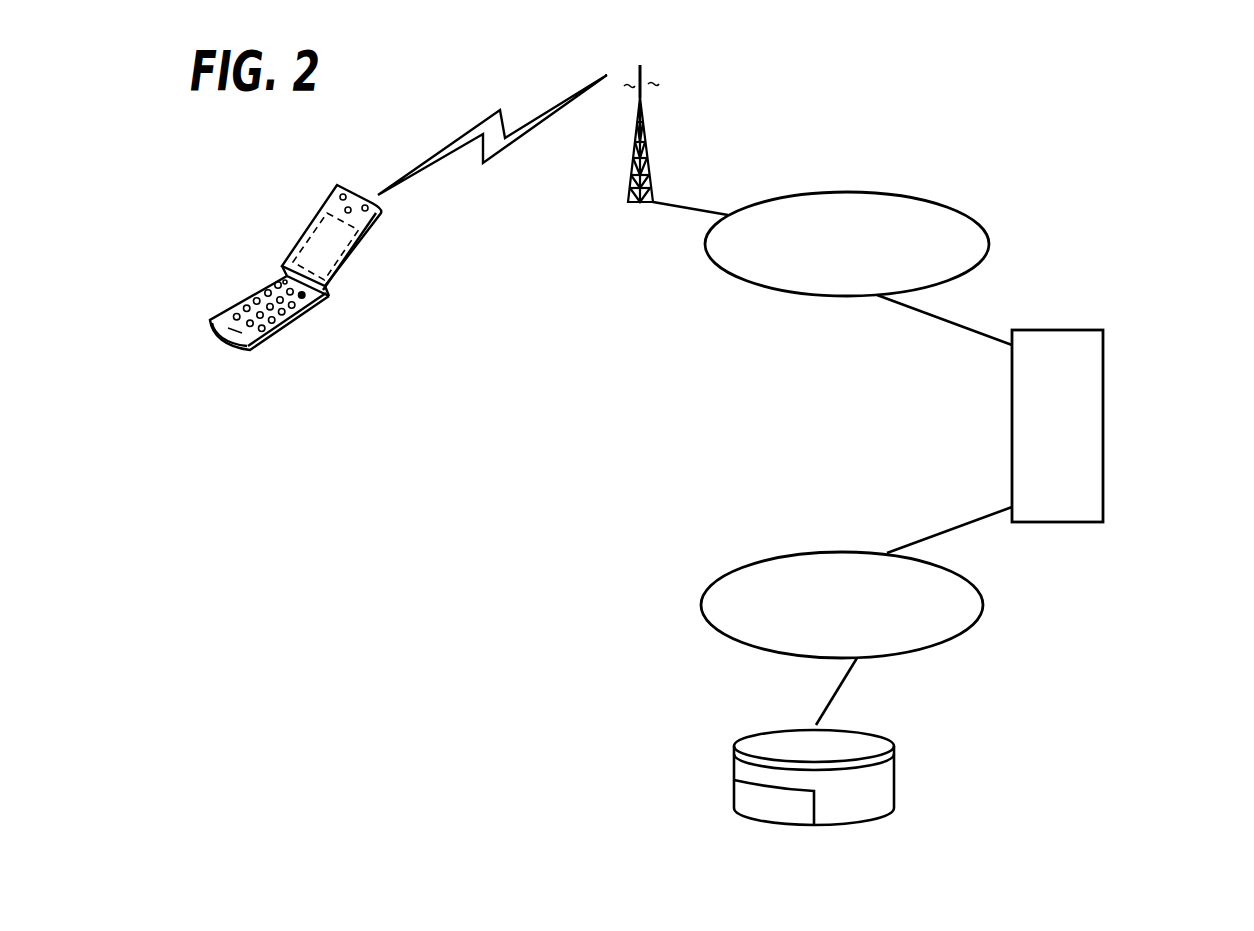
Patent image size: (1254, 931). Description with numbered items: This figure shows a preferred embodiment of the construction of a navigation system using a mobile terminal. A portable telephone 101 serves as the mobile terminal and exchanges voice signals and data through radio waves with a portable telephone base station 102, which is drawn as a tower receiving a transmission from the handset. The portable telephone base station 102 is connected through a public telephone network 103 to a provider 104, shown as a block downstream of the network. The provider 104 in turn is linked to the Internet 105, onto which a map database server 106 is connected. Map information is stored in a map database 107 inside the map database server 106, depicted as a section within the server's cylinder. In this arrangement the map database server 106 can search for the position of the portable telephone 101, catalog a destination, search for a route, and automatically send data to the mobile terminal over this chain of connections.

The portable telephone 101 is at (308, 307).
The portable telephone base station 102 is at (647, 133).
The public telephone network 103 is at (987, 222).
The provider 104 is at (1011, 428).
The Internet 105 is at (730, 570).
The map database server 106 is at (895, 767).
The map database 107 is at (772, 810).